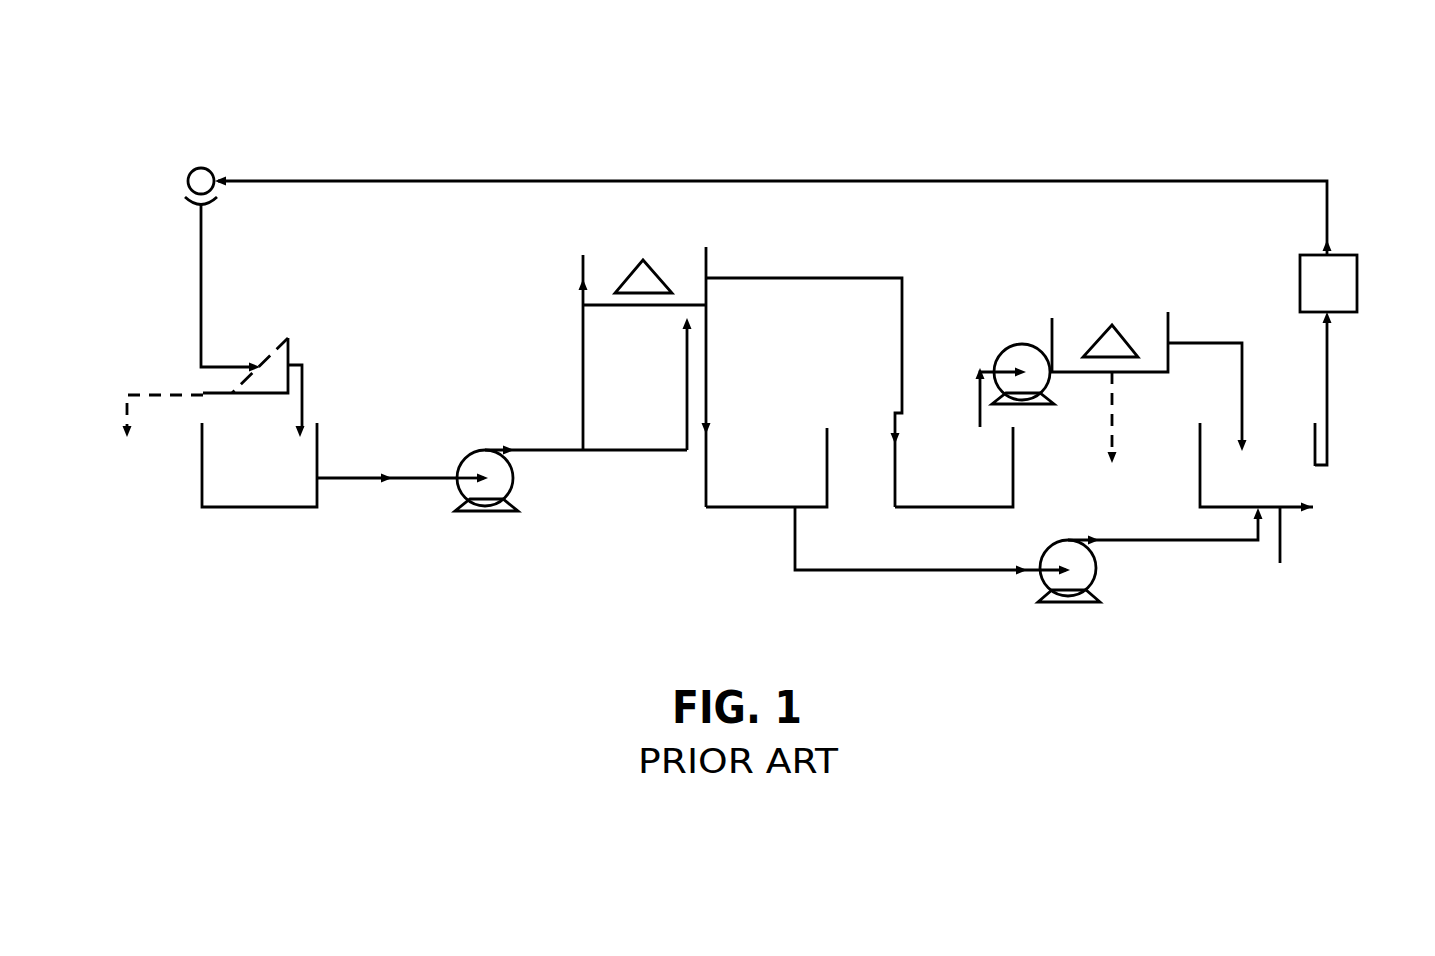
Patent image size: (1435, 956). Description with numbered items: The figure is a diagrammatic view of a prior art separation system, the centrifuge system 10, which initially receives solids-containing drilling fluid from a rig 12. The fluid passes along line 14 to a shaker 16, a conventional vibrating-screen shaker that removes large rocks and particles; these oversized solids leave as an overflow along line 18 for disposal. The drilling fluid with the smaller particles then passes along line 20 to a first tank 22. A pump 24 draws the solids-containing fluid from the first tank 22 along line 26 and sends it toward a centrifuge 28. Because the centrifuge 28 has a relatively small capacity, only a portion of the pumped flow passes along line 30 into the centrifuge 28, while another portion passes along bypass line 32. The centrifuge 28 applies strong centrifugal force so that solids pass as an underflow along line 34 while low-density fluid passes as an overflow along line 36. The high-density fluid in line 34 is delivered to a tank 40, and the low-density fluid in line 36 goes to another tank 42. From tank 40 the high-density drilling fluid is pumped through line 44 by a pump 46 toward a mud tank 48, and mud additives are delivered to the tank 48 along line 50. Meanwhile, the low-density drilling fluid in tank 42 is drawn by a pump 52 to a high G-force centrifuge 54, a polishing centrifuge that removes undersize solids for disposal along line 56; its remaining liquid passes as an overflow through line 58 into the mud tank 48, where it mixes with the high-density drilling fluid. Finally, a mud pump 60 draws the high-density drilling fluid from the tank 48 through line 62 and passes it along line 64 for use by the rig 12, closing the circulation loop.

The centrifuge system 10 is at (513, 160).
The rig 12 is at (196, 168).
The line 14 is at (203, 246).
The shaker 16 is at (308, 350).
The line 18 is at (153, 392).
The line 20 is at (303, 388).
The first tank 22 is at (275, 510).
The pump 24 is at (515, 463).
The line 26 is at (355, 470).
The centrifuge 28 is at (590, 265).
The line 30 is at (583, 380).
The bypass line 32 is at (687, 378).
The line 34 is at (707, 355).
The line 36 is at (775, 278).
The tank 40 is at (770, 510).
The tank 42 is at (945, 510).
The line 44 is at (890, 573).
The pump 46 is at (1098, 575).
The mud tank 48 is at (1200, 480).
The line 50 is at (1280, 540).
The pump 52 is at (1004, 350).
The high G-force centrifuge 54 is at (1145, 317).
The line 56 is at (1112, 410).
The line 58 is at (1195, 343).
The mud pump 60 is at (1348, 283).
The line 62 is at (1328, 378).
The line 64 is at (1137, 181).